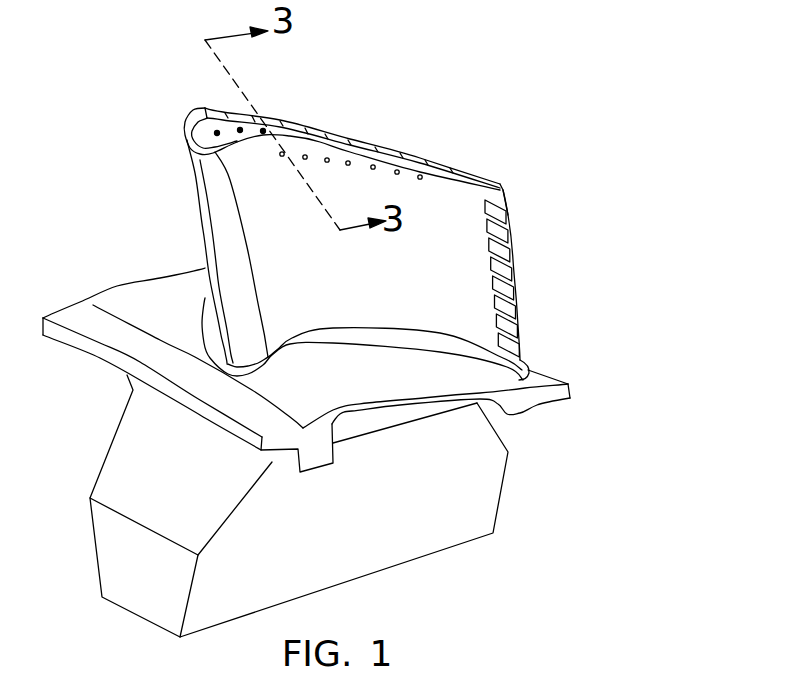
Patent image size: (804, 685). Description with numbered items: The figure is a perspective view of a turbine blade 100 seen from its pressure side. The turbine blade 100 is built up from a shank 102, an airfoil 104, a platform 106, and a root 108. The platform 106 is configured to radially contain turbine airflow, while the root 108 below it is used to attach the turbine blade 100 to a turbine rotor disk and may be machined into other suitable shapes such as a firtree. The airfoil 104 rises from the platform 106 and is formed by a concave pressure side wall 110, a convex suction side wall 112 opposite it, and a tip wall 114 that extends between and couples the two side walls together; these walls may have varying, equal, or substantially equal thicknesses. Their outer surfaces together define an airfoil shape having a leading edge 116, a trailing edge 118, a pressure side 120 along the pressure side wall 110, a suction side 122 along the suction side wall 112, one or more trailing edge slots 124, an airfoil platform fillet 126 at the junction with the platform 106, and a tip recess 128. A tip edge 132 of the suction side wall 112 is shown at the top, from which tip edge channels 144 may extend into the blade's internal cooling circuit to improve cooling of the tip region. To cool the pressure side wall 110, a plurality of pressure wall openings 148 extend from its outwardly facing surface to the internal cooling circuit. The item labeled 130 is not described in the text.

The turbine blade 100 is at (558, 140).
The shank 102 is at (362, 420).
The airfoil 104 is at (341, 269).
The platform 106 is at (374, 391).
The root 108 is at (150, 450).
The pressure side wall 110 is at (405, 185).
The suction side wall 112 is at (262, 112).
The tip wall 114 is at (200, 137).
The leading edge 116 is at (217, 232).
The trailing edge 118 is at (517, 250).
The pressure side 120 is at (448, 197).
The suction side 122 is at (330, 127).
The trailing edge slots 124 is at (503, 305).
The airfoil platform fillet 126 is at (208, 322).
The tip recess 128 is at (285, 133).
The tip cooling slot 130 is at (340, 150).
The tip edge 132 is at (212, 114).
The tip edge channels 144 is at (383, 153).
The pressure wall openings 148 is at (305, 157).